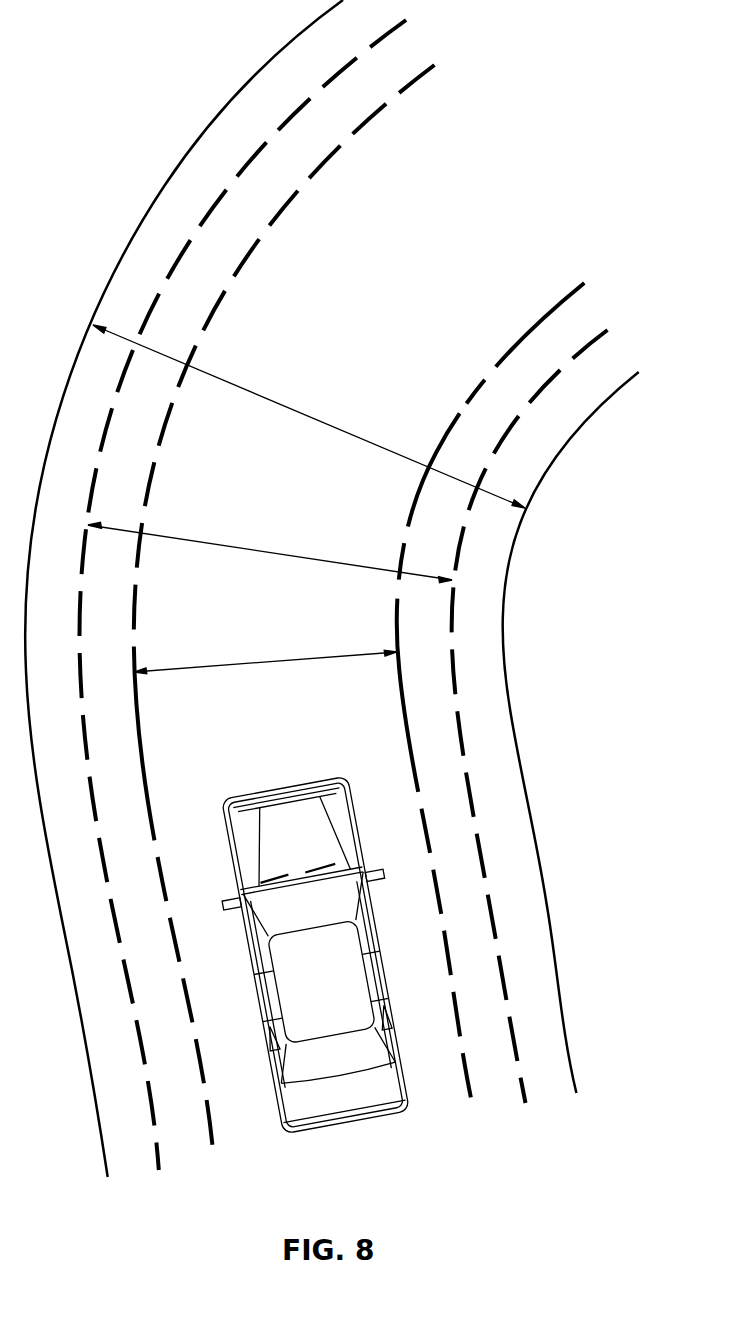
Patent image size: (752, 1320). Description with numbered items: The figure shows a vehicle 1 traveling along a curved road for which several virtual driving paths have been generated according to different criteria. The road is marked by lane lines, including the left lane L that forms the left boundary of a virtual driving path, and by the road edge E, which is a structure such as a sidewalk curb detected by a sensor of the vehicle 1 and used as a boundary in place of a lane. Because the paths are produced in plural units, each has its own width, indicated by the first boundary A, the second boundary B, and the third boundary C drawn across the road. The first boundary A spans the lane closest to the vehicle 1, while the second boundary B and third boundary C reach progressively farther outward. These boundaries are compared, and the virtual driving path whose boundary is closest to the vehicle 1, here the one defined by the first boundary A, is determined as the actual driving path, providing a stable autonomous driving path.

The vehicle 1 is at (332, 795).
The left lane L is at (259, 237).
The road edge E is at (492, 368).
The first boundary A is at (265, 657).
The second boundary B is at (270, 552).
The third boundary C is at (309, 416).